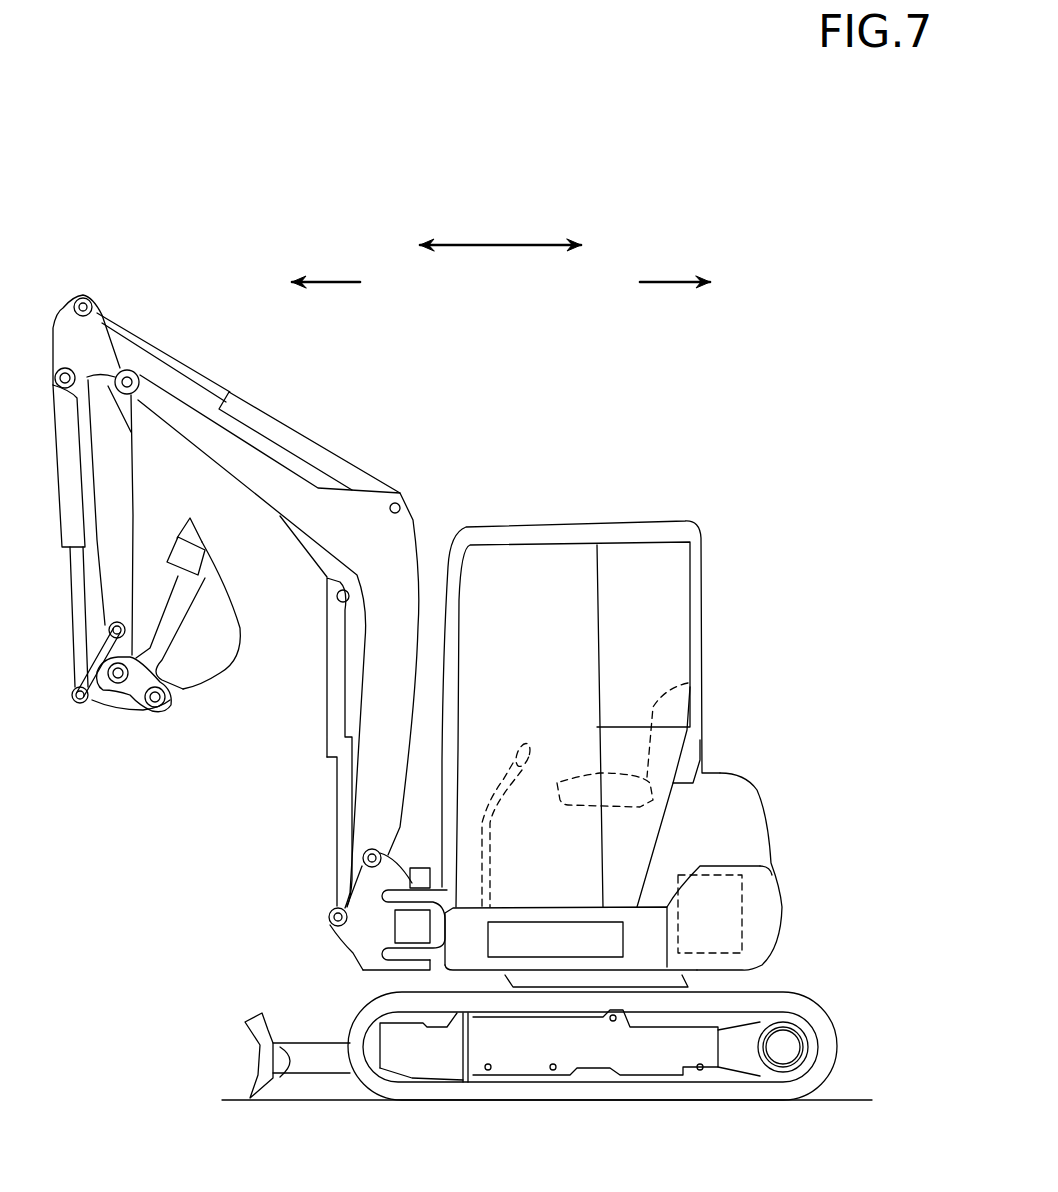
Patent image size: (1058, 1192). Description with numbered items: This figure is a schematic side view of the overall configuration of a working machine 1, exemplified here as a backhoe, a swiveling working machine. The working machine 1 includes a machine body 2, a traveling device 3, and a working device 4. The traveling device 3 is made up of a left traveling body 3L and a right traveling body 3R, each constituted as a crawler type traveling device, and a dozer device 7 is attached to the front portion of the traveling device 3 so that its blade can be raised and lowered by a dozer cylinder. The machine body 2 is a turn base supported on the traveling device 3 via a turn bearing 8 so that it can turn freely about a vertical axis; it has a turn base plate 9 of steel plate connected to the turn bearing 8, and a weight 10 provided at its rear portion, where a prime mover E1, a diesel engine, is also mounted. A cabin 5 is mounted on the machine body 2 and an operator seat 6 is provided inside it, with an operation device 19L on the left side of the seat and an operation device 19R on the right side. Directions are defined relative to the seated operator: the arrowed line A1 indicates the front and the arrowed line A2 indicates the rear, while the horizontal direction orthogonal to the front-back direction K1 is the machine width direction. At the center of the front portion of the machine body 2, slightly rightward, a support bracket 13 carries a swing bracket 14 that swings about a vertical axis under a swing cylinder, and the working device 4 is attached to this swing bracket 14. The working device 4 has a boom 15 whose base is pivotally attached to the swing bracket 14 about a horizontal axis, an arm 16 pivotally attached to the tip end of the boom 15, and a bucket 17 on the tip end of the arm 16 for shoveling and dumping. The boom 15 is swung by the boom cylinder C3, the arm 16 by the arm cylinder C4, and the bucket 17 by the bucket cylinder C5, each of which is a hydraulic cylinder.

The working machine 1 is at (777, 587).
The machine body 2 is at (452, 990).
The traveling device 3 is at (877, 967).
The traveling body 3L is at (592, 1086).
The traveling body 3R is at (592, 1086).
The working device 4 is at (407, 486).
The cabin 5 is at (706, 560).
The operator seat 6 is at (662, 705).
The dozer device 7 is at (316, 1036).
The turn bearing 8 is at (663, 984).
The turn base plate 9 is at (503, 977).
The weight 10 is at (765, 890).
The support bracket 13 is at (411, 883).
The swing bracket 14 is at (350, 942).
The boom 15 is at (347, 533).
The arm 16 is at (117, 493).
The bucket 17 is at (223, 653).
The operation device 19L is at (520, 742).
The operation device 19R is at (507, 824).
The boom cylinder C3 is at (337, 802).
The arm cylinder C4 is at (263, 410).
The bucket cylinder C5 is at (65, 527).
The prime mover E1 is at (742, 920).
The front-back direction K1 is at (500, 245).
The arrowed line A1 is at (335, 282).
The arrowed line A2 is at (670, 282).